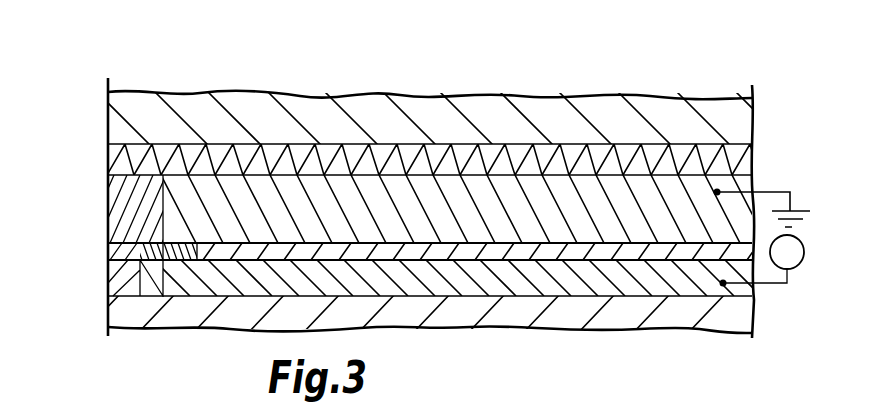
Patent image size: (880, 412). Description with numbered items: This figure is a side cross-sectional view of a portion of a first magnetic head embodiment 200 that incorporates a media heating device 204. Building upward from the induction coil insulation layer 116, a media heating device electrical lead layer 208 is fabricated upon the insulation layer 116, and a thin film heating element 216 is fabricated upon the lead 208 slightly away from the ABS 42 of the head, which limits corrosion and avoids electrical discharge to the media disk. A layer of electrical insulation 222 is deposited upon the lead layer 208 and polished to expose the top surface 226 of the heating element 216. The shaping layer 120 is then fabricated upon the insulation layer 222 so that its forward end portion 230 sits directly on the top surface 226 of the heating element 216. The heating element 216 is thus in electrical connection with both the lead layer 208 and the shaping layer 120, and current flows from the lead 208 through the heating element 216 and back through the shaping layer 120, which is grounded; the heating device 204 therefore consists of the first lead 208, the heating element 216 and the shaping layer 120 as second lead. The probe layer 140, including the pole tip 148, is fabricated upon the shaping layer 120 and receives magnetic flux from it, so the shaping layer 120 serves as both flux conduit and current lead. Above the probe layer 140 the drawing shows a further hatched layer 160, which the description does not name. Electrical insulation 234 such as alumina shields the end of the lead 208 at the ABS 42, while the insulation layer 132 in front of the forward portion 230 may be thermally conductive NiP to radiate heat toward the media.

The magnetic head embodiment 200 is at (162, 78).
The forward end portion of the shaping layer 230 is at (183, 187).
The top layer 160 is at (304, 117).
The probe layer 140 is at (430, 155).
The shaping layer 120 is at (530, 183).
The pole tip 148 is at (120, 155).
The insulation layer 132 is at (120, 193).
The electrical insulation layer 222 is at (108, 242).
The media heating device 204 is at (98, 252).
The electrical insulation 234 is at (118, 274).
The ABS 42 is at (107, 320).
The thin film heating element 216 is at (161, 298).
The top surface of the heating element 226 is at (167, 267).
The induction coil insulation layer 116 is at (658, 320).
The media heating device electrical lead layer 208 is at (752, 288).